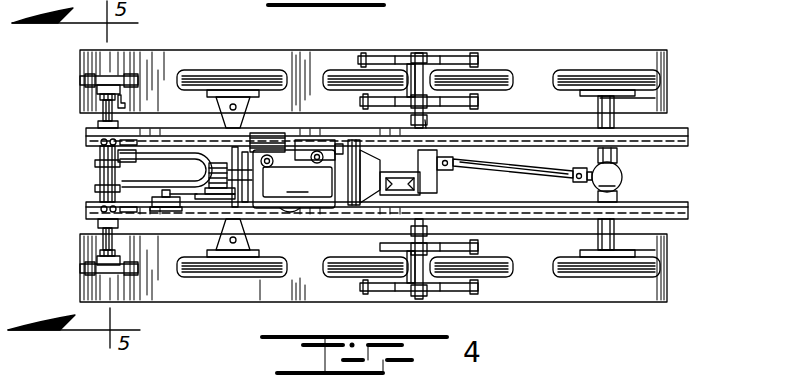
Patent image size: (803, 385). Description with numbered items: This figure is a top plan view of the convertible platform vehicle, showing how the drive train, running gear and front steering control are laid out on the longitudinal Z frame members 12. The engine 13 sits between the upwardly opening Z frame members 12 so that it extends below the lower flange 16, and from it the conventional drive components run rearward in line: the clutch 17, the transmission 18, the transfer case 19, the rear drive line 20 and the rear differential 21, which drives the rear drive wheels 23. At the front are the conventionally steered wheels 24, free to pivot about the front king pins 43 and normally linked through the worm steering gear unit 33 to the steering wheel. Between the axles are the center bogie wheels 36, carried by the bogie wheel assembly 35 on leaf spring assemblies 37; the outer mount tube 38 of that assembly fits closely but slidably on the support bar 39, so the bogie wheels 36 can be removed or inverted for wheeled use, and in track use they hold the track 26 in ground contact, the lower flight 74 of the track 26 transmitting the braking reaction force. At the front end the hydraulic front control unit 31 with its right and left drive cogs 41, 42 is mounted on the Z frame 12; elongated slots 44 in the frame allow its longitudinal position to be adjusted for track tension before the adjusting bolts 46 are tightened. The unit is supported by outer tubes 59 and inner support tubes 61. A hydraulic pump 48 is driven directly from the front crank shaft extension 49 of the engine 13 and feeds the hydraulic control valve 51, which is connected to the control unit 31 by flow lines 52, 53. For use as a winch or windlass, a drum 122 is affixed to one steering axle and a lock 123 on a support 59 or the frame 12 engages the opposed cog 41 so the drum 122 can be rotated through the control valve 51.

The Z frame members 12 is at (689, 138).
The engine 13 is at (296, 172).
The lower flange 16 is at (689, 144).
The clutch 17 is at (360, 172).
The transmission 18 is at (412, 189).
The transfer case 19 is at (440, 178).
The rear drive line 20 is at (532, 172).
The rear differential 21 is at (607, 175).
The rear drive wheels 23 is at (578, 70).
The front steered wheels 24 is at (213, 70).
The track 26 is at (628, 58).
The front control unit 31 is at (93, 173).
The worm steering gear unit 33 is at (150, 203).
The bogie wheel assembly 35 is at (413, 75).
The center bogie wheels 36 is at (328, 71).
The leaf spring assemblies 37 is at (447, 57).
The outer mount tube 38 is at (419, 54).
The support bar 39 is at (426, 120).
The right drive cog 41 is at (80, 79).
The left drive cog 42 is at (82, 270).
The front king pins 43 is at (240, 104).
The elongated slots 44 is at (128, 140).
The adjusting bolts 46 is at (100, 146).
The hydraulic pump 48 is at (217, 162).
The front crank shaft extension 49 is at (257, 188).
The hydraulic control valve 51 is at (214, 197).
The flow line 52 is at (166, 156).
The flow line 53 is at (153, 156).
The outer tubes 59 is at (105, 107).
The inner support tubes 61 is at (100, 122).
The lower flight 74 is at (265, 56).
The drum 122 is at (128, 266).
The lock 123 is at (122, 103).